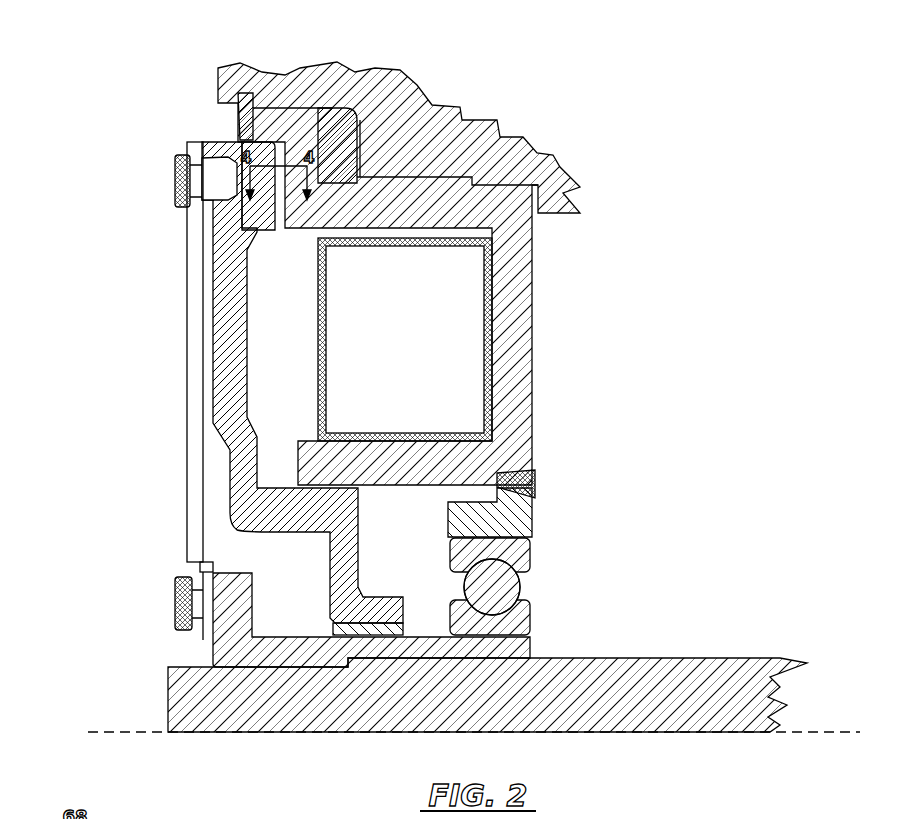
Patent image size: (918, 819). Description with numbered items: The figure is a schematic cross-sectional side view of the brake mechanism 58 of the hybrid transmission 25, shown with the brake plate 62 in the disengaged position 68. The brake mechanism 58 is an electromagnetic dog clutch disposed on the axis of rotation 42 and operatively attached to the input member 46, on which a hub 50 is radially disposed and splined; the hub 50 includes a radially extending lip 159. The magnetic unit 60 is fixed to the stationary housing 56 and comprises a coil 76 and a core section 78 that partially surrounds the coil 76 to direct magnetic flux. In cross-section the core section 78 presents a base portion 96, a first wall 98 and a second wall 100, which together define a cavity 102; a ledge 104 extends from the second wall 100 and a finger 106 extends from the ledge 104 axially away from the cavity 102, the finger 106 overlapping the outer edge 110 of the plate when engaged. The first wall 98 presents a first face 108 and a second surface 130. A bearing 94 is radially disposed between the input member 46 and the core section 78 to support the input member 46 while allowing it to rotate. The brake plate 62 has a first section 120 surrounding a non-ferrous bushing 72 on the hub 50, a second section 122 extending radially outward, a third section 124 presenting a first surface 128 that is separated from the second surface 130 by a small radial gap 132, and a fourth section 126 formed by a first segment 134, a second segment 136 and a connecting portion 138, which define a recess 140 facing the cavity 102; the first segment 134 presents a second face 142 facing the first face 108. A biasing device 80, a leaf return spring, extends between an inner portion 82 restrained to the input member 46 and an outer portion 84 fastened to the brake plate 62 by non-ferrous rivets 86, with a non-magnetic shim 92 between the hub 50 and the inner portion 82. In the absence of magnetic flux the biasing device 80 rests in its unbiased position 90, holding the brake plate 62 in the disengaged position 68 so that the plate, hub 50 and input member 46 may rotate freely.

The hybrid transmission 25 is at (176, 84).
The axis of rotation 42 is at (90, 730).
The input member 46 is at (168, 690).
The hub 50 is at (210, 645).
The housing 56 is at (283, 75).
The brake mechanism 58 is at (163, 122).
The magnetic unit 60 is at (520, 294).
The brake plate 62 is at (222, 300).
The disengaged position 68 is at (158, 160).
The bushing 72 is at (373, 623).
The coil 76 is at (388, 337).
The core section 78 is at (522, 338).
The biasing device 80 is at (195, 340).
The inner portion 82 is at (187, 573).
The outer portion 84 is at (203, 198).
The rivets 86 is at (197, 178).
The unbiased position 90 is at (170, 277).
The shim 92 is at (193, 570).
The bearing 94 is at (518, 578).
The base portion 96 is at (522, 380).
The first wall 98 is at (397, 480).
The second wall 100 is at (425, 197).
The cavity 102 is at (470, 215).
The ledge 104 is at (295, 147).
The finger 106 is at (282, 120).
The first face 108 is at (286, 458).
The outer edge 110 is at (243, 134).
The first section 120 is at (395, 610).
The second section 122 is at (350, 587).
The third section 124 is at (270, 523).
The fourth section 126 is at (213, 398).
The first surface 128 is at (306, 474).
The second surface 130 is at (323, 500).
The small radial gap 132 is at (343, 502).
The first segment 134 is at (225, 435).
The second segment 136 is at (232, 205).
The connecting portion 138 is at (215, 315).
The recess 140 is at (271, 333).
The second face 142 is at (261, 440).
The lip 159 is at (252, 583).